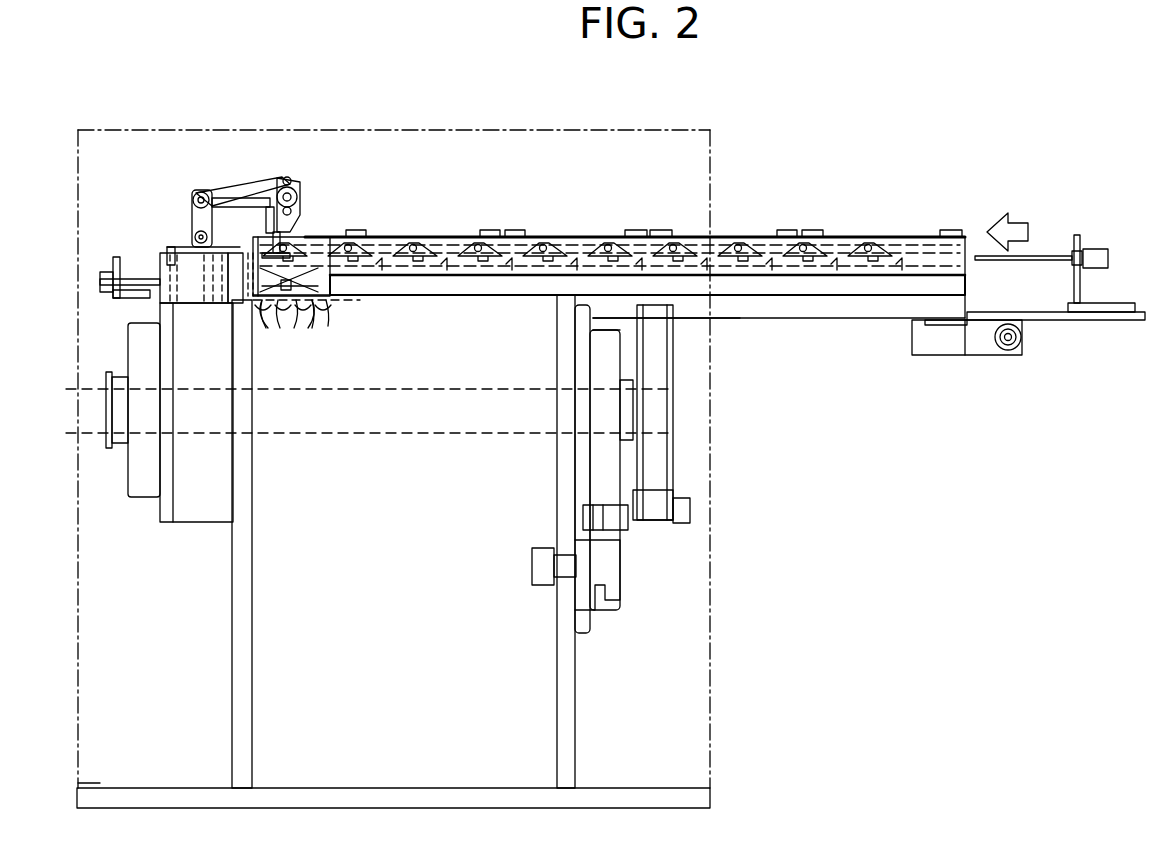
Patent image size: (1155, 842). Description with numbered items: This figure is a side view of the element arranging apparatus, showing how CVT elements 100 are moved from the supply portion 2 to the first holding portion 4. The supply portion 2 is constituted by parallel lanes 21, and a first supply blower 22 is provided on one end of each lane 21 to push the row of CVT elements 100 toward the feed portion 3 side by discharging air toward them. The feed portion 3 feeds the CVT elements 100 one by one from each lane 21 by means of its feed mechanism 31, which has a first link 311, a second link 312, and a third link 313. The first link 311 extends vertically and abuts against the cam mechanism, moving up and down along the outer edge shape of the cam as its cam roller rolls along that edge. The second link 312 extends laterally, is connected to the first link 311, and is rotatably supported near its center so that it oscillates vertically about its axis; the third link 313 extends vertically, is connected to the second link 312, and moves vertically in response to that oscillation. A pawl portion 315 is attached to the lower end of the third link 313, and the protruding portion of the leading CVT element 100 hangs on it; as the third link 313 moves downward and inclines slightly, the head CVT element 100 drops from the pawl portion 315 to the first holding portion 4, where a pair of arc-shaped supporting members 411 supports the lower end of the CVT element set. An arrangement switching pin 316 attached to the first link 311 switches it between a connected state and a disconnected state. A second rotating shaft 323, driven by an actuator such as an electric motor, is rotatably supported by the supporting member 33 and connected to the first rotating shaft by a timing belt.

The supply portion 2 is at (594, 234).
The lane 21 is at (903, 249).
The first supply blower 22 is at (1097, 248).
The feed portion 3 is at (262, 180).
The feed mechanism 31 is at (200, 190).
The first link 311 is at (192, 231).
The second link 312 is at (238, 196).
The third link 313 is at (290, 180).
The pawl portion 315 is at (318, 292).
The arrangement switching pin 316 is at (109, 269).
The second rotating shaft 323 is at (414, 410).
The supporting member 33 is at (555, 483).
The first holding portion 4 is at (295, 324).
The supporting member 411 is at (265, 317).
The CVT element 100 is at (300, 262).